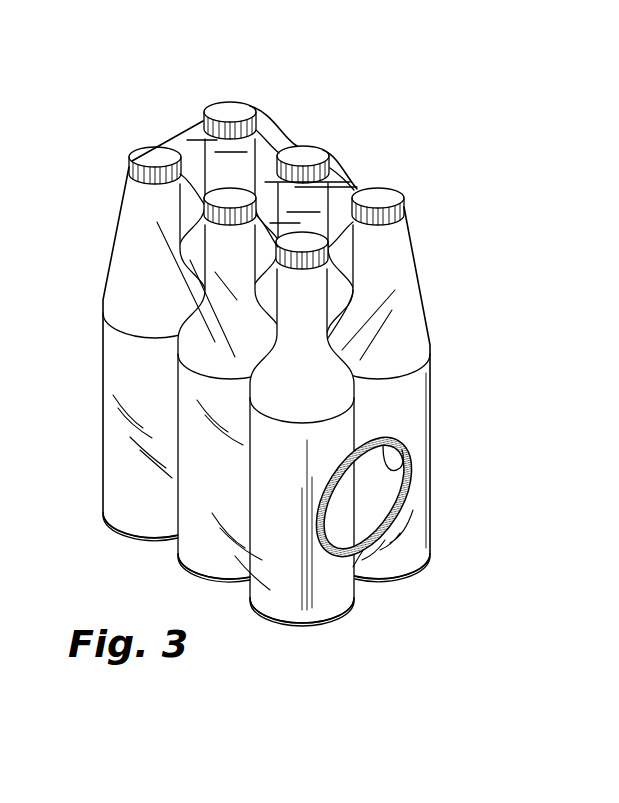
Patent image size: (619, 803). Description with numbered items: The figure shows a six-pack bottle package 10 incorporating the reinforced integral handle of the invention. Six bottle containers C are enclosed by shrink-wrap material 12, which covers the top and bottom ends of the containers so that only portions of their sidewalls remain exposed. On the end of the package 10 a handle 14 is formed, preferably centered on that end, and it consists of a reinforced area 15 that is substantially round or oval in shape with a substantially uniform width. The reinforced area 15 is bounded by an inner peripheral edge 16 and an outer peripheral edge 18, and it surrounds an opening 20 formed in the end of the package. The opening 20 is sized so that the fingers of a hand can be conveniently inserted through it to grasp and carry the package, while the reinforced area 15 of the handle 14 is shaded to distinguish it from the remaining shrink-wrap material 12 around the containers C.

The package 10 is at (412, 146).
The shrink-wrap material 12 is at (185, 140).
The handle 14 is at (405, 530).
The reinforced area 15 is at (398, 443).
The inner peripheral edge 16 is at (402, 461).
The outer peripheral edge 18 is at (409, 490).
The opening 20 is at (342, 510).
The container C is at (380, 272).